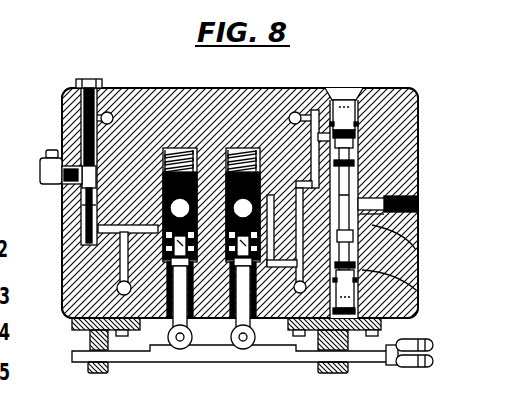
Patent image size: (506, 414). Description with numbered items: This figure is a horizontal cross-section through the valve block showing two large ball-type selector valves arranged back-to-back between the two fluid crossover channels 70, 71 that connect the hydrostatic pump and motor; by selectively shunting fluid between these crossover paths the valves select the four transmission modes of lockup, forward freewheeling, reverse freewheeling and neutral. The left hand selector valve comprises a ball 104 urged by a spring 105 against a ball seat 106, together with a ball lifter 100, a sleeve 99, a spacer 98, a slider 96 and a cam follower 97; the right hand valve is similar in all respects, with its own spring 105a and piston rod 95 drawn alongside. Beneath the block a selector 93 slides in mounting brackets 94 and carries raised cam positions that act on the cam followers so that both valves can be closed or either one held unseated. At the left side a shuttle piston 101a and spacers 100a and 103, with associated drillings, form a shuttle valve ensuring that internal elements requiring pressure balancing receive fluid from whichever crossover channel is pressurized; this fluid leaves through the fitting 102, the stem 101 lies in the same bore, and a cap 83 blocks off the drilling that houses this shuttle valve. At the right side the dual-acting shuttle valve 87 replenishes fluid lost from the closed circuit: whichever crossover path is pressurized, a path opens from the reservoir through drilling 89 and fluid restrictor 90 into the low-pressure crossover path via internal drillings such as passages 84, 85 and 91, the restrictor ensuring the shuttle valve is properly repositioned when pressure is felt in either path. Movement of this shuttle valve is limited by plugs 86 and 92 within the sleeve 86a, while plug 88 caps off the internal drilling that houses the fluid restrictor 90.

The fluid crossover channel 70 is at (165, 160).
The fluid crossover channel 71 is at (266, 145).
The cap 83 is at (86, 80).
The fluid passage 84 is at (309, 149).
The fluid passage 85 is at (285, 226).
The plug 86 is at (343, 100).
The valve sleeve 86a is at (360, 125).
The dual-acting shuttle valve 87 is at (360, 165).
The plug 88 is at (418, 202).
The drilling 89 is at (408, 220).
The fluid restrictor 90 is at (372, 225).
The passage 91 is at (362, 270).
The plug 92 is at (360, 283).
The selector 93 is at (394, 362).
The mounting bracket 94 is at (340, 372).
The second piston rod 95 is at (247, 323).
The slider 96 is at (193, 322).
The cam follower 97 is at (170, 343).
The spacer 98 is at (132, 338).
The sleeve 99 is at (78, 295).
The ball lifter 100 is at (110, 258).
The spacer 100a is at (113, 236).
The bolt stem 101 is at (82, 222).
The shuttle piston 101a is at (82, 190).
The fitting 102 is at (40, 172).
The spacer 103 is at (85, 152).
The ball 104 is at (165, 200).
The spring 105 is at (183, 163).
The second spring 105a is at (222, 165).
The ball seat 106 is at (166, 205).